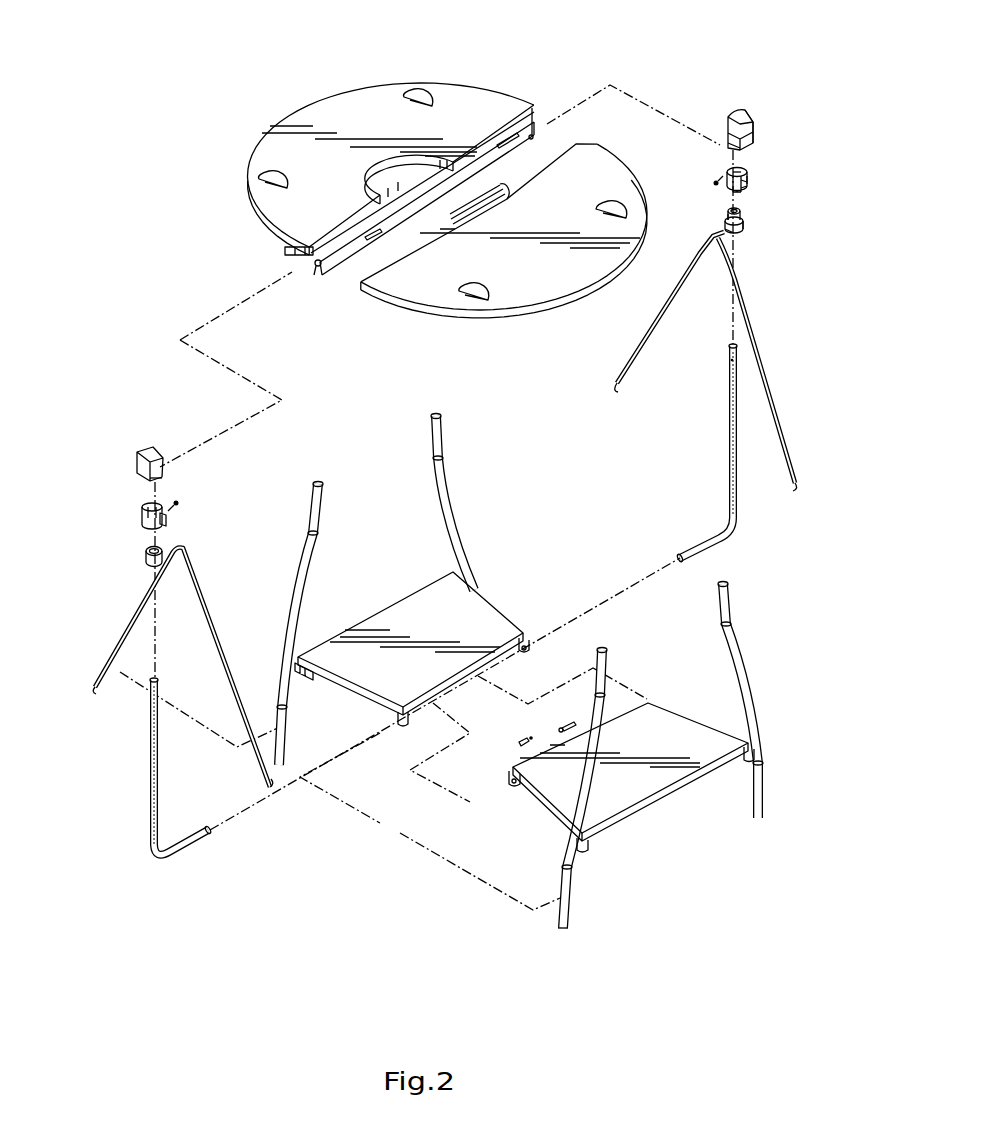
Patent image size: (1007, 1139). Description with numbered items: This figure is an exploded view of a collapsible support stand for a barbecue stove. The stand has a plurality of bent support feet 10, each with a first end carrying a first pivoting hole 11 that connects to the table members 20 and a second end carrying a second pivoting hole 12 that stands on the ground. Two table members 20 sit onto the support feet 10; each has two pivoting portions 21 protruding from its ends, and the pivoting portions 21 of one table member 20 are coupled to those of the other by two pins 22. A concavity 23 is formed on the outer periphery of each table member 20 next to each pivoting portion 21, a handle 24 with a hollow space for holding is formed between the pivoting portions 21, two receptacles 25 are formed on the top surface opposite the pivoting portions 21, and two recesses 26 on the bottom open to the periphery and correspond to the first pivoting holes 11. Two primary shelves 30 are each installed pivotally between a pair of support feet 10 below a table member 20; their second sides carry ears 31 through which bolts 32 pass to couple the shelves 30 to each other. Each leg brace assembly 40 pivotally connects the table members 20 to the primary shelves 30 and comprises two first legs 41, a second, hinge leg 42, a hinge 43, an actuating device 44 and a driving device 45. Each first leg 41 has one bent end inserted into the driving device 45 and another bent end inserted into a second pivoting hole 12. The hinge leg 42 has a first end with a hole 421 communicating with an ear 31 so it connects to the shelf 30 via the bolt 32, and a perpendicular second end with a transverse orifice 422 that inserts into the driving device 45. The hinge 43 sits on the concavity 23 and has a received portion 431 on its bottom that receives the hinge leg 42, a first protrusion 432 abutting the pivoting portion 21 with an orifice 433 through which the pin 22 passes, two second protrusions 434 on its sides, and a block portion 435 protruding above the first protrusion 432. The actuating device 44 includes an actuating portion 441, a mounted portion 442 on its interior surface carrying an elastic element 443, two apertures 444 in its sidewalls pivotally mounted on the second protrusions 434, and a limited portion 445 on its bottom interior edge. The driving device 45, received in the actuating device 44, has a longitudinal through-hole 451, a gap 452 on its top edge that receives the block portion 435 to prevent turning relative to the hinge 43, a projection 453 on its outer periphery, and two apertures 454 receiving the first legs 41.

The support foot 10 is at (520, 686).
The first pivoting hole 11 is at (598, 656).
The second pivoting hole 12 is at (562, 900).
The table member 20 is at (342, 124).
The pivoting portion 21 is at (320, 268).
The pin 22 is at (364, 262).
The concavity 23 is at (300, 264).
The handle 24 is at (420, 190).
The receptacle 25 is at (262, 181).
The recess 26 is at (510, 302).
The primary shelf 30 is at (524, 718).
The ear 31 is at (520, 785).
The bolt 32 is at (514, 746).
The leg brace assembly 40 is at (442, 486).
The first leg 41 is at (640, 345).
The second, hinge leg 42 is at (412, 599).
The hole 421 is at (680, 557).
The orifice 422 is at (731, 360).
The hinge 43 is at (445, 260).
The received portion 431 is at (150, 487).
The first protrusion 432 is at (748, 115).
The orifice 433 is at (728, 135).
The second protrusion 434 is at (750, 125).
The block portion 435 is at (750, 140).
The actuating device 44 is at (442, 341).
The actuating portion 441 is at (748, 178).
The mounted portion 442 is at (746, 170).
The elastic element 443 is at (445, 333).
The aperture 444 is at (750, 186).
The limited portion 445 is at (750, 194).
The driving device 45 is at (440, 381).
The through-hole 451 is at (728, 212).
The gap 452 is at (729, 220).
The projection 453 is at (746, 224).
The aperture 454 is at (722, 228).